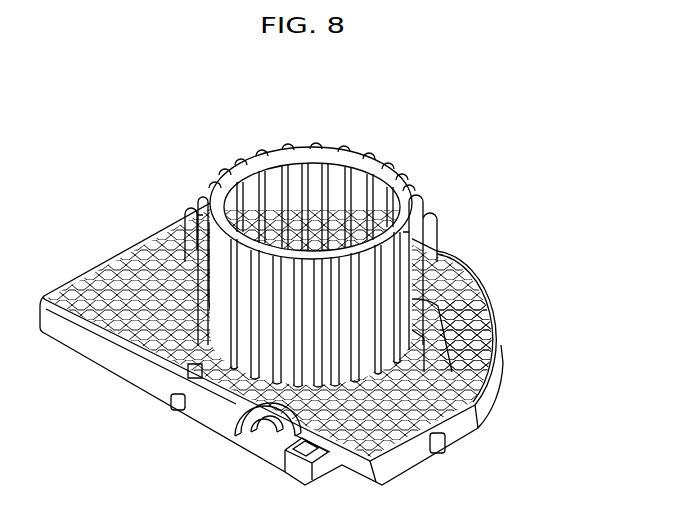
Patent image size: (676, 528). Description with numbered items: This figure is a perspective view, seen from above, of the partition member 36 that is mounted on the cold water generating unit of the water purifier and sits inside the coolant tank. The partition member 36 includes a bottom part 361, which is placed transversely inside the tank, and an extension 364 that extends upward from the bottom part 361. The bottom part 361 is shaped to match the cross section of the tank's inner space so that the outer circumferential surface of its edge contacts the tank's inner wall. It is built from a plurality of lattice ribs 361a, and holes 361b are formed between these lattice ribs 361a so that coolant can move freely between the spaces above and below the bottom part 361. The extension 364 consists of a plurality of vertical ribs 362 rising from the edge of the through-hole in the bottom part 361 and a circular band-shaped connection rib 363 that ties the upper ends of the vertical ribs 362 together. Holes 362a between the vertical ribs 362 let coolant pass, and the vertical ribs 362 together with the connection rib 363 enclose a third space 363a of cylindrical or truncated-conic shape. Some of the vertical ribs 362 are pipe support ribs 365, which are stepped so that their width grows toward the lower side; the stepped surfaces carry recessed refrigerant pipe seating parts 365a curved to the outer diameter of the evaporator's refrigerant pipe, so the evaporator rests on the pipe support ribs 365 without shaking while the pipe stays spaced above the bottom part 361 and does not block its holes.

The partition member 36 is at (156, 152).
The bottom part 361 is at (501, 378).
The lattice ribs 361a is at (468, 378).
The holes 361b is at (422, 440).
The vertical ribs 362 is at (416, 190).
The holes 362a is at (226, 412).
The connection rib 363 is at (359, 163).
The third space 363a is at (310, 178).
The extension 364 is at (440, 106).
The pipe support ribs 365 is at (405, 310).
The refrigerant pipe seating parts 365a is at (496, 342).